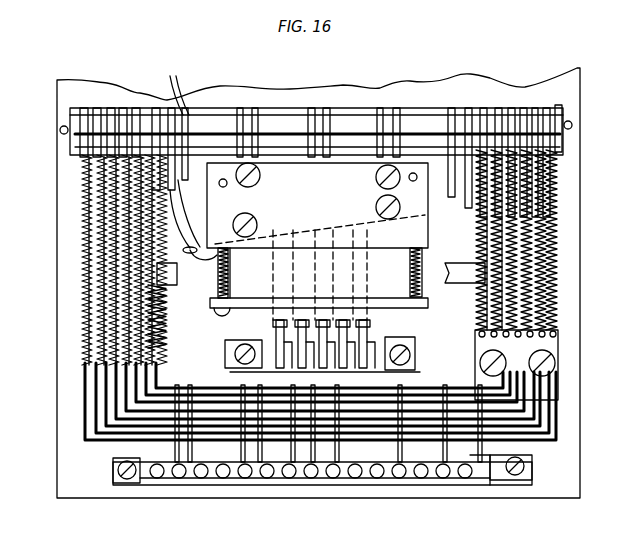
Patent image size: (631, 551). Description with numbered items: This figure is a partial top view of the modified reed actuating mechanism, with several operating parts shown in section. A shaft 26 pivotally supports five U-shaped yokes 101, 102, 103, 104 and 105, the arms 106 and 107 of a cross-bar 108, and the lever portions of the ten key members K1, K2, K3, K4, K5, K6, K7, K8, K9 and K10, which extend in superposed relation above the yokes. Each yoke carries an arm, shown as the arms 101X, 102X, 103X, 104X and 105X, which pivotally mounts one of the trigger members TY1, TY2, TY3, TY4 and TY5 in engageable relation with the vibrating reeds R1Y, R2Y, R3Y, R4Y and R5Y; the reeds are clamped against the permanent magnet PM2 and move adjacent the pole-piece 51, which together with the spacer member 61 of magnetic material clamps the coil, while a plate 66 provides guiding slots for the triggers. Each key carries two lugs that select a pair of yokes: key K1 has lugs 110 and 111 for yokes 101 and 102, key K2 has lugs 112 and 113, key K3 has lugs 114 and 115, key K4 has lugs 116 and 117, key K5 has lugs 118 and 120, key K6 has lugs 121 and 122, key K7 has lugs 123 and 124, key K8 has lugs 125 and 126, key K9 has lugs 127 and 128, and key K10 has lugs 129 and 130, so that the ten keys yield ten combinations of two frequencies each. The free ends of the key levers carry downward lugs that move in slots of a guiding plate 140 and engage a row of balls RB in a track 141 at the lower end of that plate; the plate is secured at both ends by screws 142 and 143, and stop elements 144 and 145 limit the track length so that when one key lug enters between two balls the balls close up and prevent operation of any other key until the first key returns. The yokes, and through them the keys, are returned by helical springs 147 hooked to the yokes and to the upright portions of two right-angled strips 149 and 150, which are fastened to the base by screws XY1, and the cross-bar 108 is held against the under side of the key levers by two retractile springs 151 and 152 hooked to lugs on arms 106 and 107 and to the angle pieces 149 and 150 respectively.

The shaft 26 is at (62, 130).
The arm of cross-bar 106 is at (155, 175).
The U-shaped yoke 101 is at (140, 198).
The U-shaped yoke 102 is at (128, 220).
The U-shaped yoke 103 is at (116, 245).
The U-shaped yoke 104 is at (104, 271).
The U-shaped yoke 105 is at (92, 296).
The helical springs 147 is at (95, 315).
The right-angled strip 149 is at (83, 374).
The lug 110 is at (177, 390).
The lug 111 is at (187, 417).
The lug 121 is at (187, 437).
The stop element 144 is at (118, 466).
The screw 142 is at (147, 463).
The lug 122 is at (180, 420).
The lug 112 is at (200, 400).
The lug 113 is at (240, 470).
The lug 123 is at (262, 440).
The lug 124 is at (272, 468).
The arm 101X is at (318, 378).
The arm 102X is at (335, 378).
The lug 114 is at (310, 485).
The lug 115 is at (340, 380).
The lug 126 is at (338, 490).
The lug 125 is at (360, 380).
The contact 103X is at (363, 378).
The arm 104X is at (385, 380).
The arm 105X is at (380, 470).
The lug 117 is at (400, 470).
The lug 116 is at (410, 475).
The balls RB is at (420, 470).
The lug 120 is at (465, 470).
The track 141 is at (490, 478).
The guiding plate 140 is at (500, 480).
The screw 143 is at (532, 474).
The stop element 145 is at (530, 455).
The lug 130 is at (555, 441).
The lug 129 is at (555, 421).
The lug 118 is at (553, 401).
The right-angled strip 150 is at (558, 346).
The lug 127 is at (405, 425).
The lug 128 is at (402, 420).
The arm of cross-bar 107 is at (495, 212).
The retractile spring 152 is at (488, 234).
The cross-bar 108 is at (178, 273).
The spacer member 61 is at (320, 273).
The pole-piece 51 is at (420, 304).
The vibrating reed R1Y is at (280, 320).
The vibrating reed R2Y is at (293, 320).
The vibrating reed R3Y is at (318, 320).
The vibrating reed R4Y is at (335, 320).
The vibrating reed R5Y is at (366, 328).
The trigger member TY1 is at (276, 328).
The trigger member TY2 is at (300, 337).
The trigger member TY3 is at (225, 355).
The trigger member TY4 is at (372, 340).
The trigger member TY5 is at (412, 348).
The plate 66 is at (240, 373).
The retractile spring 151 is at (167, 298).
The screws XY1 is at (517, 353).
The permanent magnet PM2 is at (317, 205).
The key member K1 is at (170, 108).
The key member K2 is at (240, 108).
The key member K3 is at (312, 108).
The key member K4 is at (380, 108).
The key member K5 is at (452, 108).
The key member K6 is at (186, 115).
The key member K7 is at (256, 108).
The key member K8 is at (327, 108).
The key member K9 is at (397, 108).
The key member K10 is at (470, 108).